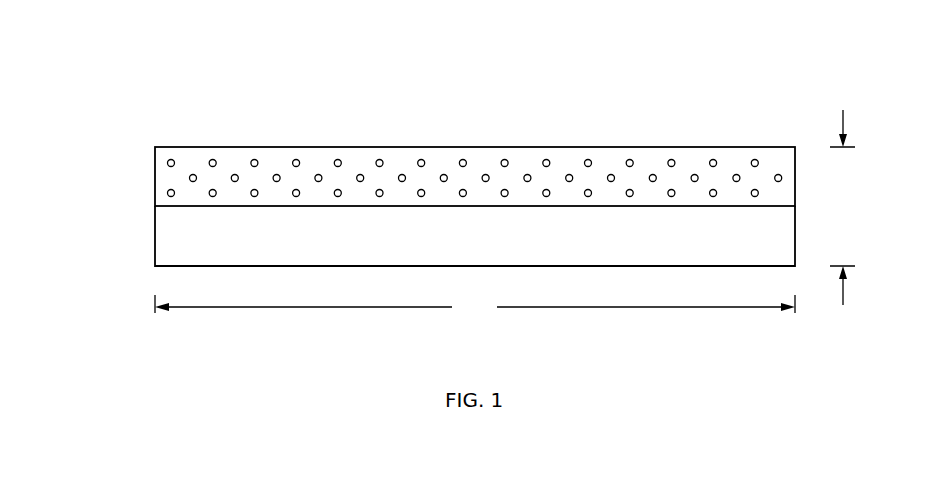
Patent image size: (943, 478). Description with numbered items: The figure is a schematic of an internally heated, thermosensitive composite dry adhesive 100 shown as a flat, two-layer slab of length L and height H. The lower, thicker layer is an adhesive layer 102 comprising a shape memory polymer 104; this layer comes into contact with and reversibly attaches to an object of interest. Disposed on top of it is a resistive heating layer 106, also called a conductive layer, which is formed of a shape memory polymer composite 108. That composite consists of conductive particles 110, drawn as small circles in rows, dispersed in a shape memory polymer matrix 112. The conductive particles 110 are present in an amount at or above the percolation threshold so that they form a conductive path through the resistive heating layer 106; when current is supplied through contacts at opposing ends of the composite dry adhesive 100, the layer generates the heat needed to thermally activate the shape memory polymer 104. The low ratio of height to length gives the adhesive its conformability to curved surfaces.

The composite dry adhesive 100 is at (183, 68).
The adhesive layer 102 is at (414, 256).
The shape memory polymer 104 is at (155, 267).
The resistive heating layer 106 is at (419, 156).
The shape memory polymer composite 108 is at (155, 173).
The conductive particles 110 is at (193, 174).
The shape memory polymer matrix 112 is at (275, 158).